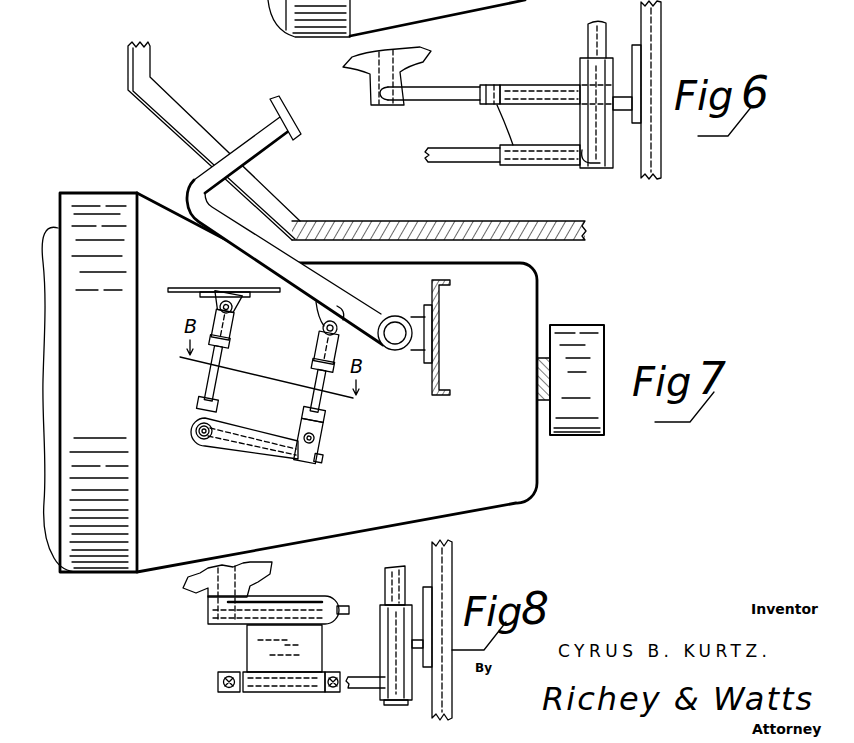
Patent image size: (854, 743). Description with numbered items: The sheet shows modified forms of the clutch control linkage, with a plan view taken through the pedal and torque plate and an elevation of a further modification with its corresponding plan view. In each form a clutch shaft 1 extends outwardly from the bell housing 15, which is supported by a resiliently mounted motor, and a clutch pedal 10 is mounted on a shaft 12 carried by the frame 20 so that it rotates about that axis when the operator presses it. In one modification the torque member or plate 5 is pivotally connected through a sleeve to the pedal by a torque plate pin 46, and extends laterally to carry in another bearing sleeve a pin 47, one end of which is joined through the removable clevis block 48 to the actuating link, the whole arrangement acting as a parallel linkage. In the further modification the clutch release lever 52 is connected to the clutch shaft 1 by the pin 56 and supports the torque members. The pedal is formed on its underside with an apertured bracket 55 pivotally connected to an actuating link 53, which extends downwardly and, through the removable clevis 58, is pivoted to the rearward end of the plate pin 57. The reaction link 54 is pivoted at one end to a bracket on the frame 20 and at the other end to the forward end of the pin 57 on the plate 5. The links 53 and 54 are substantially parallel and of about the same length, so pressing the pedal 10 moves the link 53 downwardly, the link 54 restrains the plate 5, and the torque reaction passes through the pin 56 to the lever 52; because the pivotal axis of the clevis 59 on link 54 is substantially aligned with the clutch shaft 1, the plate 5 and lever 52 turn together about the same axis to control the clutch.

In FIG. 8, the clutch shaft 1 is at (200, 586).
In FIG. 6, the torque member or plate 5 is at (522, 128).
In FIG. 8, the torque member or plate 5 is at (261, 652).
In FIG. 7, the clutch pedal 10 is at (228, 226).
In FIG. 7, the shaft 12 is at (395, 340).
In FIG. 8, the shaft 12 is at (394, 567).
In FIG. 7, the bell housing 15 is at (85, 389).
In FIG. 6, the frame 20 is at (654, 40).
In FIG. 7, the frame 20 is at (183, 293).
In FIG. 8, the frame 20 is at (444, 562).
In FIG. 6, the torque plate pin 46 is at (537, 166).
In FIG. 6, the pin 47 is at (536, 84).
In FIG. 6, the removable clevis block 48 is at (488, 84).
In FIG. 8, the clutch release lever 52 is at (277, 596).
In FIG. 7, the actuating link 53 is at (320, 400).
In FIG. 8, the actuating link 53 is at (329, 694).
In FIG. 7, the reaction link 54 is at (213, 386).
In FIG. 8, the reaction link 54 is at (218, 682).
In FIG. 7, the apertured bracket 55 is at (323, 322).
In FIG. 8, the pin 56 is at (208, 613).
In FIG. 8, the plate pin 57 is at (281, 690).
In FIG. 7, the removable clevis 58 is at (319, 426).
In FIG. 7, the clevis 59 is at (194, 410).